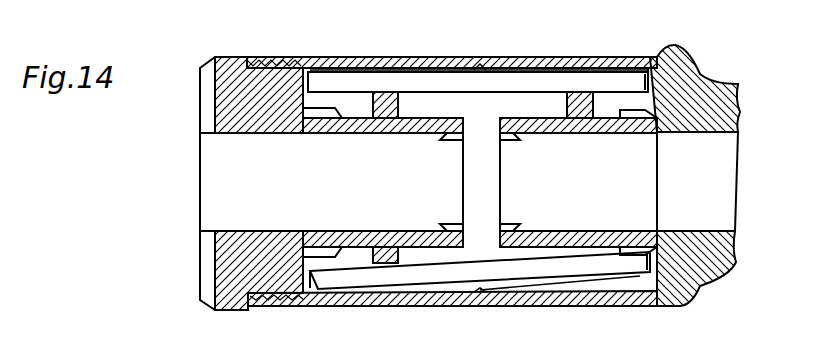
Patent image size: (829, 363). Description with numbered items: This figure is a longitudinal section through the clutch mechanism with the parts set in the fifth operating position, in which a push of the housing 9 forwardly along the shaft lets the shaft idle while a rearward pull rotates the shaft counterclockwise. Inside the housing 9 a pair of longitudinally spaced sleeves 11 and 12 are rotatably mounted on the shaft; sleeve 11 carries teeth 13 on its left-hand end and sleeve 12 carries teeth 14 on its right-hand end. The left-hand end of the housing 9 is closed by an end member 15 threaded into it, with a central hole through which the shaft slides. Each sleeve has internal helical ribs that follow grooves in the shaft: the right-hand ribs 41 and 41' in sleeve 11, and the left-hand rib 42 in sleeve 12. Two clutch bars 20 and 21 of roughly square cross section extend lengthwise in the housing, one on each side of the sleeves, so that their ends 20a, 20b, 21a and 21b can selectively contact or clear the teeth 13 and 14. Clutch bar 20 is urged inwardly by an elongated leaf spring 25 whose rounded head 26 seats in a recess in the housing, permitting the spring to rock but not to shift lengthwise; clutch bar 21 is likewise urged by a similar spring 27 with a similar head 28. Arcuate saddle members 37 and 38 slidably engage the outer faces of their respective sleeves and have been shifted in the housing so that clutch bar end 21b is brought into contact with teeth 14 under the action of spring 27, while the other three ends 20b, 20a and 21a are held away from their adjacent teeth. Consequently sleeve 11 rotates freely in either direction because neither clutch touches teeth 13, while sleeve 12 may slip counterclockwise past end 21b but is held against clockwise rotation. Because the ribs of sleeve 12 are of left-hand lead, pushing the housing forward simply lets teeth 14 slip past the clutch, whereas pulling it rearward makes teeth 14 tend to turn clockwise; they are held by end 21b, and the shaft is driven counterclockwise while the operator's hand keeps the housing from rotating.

The housing 9 is at (449, 57).
The sleeve 11 is at (364, 133).
The sleeve 12 is at (610, 133).
The teeth 13 is at (313, 118).
The teeth 14 is at (678, 133).
The end member 15 is at (220, 100).
The clutch bar 20 is at (450, 84).
The clutch bar end 20a is at (313, 78).
The clutch bar end 20b is at (644, 78).
The clutch bar 21 is at (426, 275).
The clutch bar end 21a is at (319, 282).
The clutch bar end 21b is at (641, 275).
The leaf spring 25 is at (534, 70).
The head 26 is at (481, 66).
The spring 27 is at (548, 286).
The head 28 is at (481, 294).
The saddle member 37 is at (585, 92).
The saddle member 38 is at (388, 92).
The internal projection 41 is at (435, 190).
The internal projection 41' is at (434, 213).
The internal projection 42 is at (520, 140).